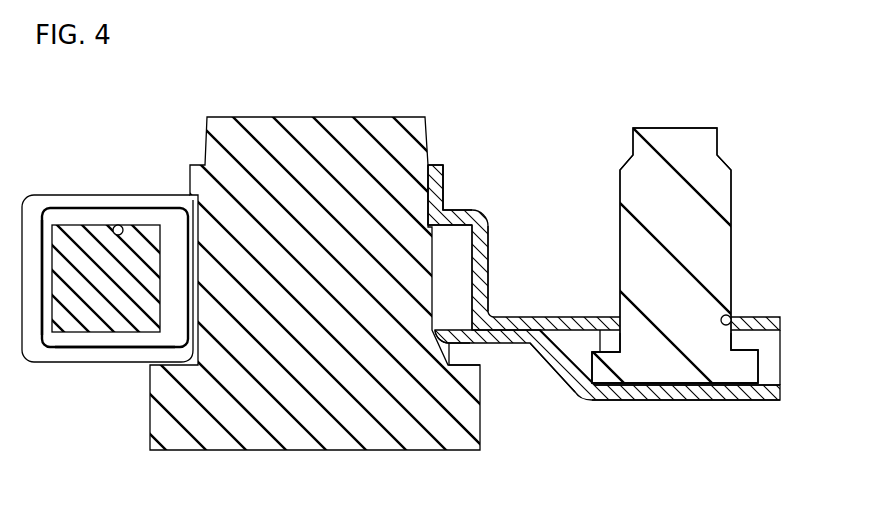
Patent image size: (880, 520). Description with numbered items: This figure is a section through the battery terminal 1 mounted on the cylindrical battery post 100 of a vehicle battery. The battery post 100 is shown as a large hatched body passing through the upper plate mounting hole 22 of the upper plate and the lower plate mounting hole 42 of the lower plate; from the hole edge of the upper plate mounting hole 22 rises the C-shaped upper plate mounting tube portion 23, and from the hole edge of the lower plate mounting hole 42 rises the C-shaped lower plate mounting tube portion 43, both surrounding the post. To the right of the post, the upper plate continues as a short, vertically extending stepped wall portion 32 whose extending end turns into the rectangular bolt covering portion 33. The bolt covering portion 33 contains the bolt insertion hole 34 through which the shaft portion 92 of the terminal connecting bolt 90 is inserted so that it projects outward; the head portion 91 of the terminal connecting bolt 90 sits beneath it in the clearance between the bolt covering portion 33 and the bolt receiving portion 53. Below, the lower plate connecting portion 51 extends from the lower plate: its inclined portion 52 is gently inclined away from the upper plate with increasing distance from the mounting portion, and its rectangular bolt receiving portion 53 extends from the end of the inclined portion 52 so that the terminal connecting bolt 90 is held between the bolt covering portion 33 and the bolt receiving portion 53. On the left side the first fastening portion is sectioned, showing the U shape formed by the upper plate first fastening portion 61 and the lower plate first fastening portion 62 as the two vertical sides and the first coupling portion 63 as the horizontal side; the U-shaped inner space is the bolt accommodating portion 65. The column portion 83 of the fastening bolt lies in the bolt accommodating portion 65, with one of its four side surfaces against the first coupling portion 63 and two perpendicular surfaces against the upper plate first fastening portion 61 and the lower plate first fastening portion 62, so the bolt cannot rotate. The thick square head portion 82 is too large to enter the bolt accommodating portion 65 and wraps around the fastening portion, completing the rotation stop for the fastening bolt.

The battery terminal 1 is at (648, 67).
The upper plate mounting hole 22 is at (428, 216).
The upper plate mounting tube portion 23 is at (441, 188).
The stepped wall portion 32 is at (488, 268).
The bolt covering portion 33 is at (565, 318).
The bolt insertion hole 34 is at (729, 316).
The lower plate mounting hole 42 is at (440, 337).
The lower plate mounting tube portion 43 is at (455, 358).
The lower plate connecting portion 51 is at (743, 426).
The inclined portion 52 is at (546, 366).
The bolt receiving portion 53 is at (678, 398).
The upper plate first fastening portion 61 is at (97, 218).
The lower plate first fastening portion 62 is at (75, 340).
The first coupling portion 63 is at (45, 263).
The bolt accommodating portion 65 is at (121, 228).
The head portion 82 is at (67, 200).
The column portion 83 is at (112, 312).
The terminal connecting bolt 90 is at (741, 149).
The head portion 91 is at (745, 368).
The shaft portion 92 is at (717, 235).
The battery post 100 is at (290, 128).